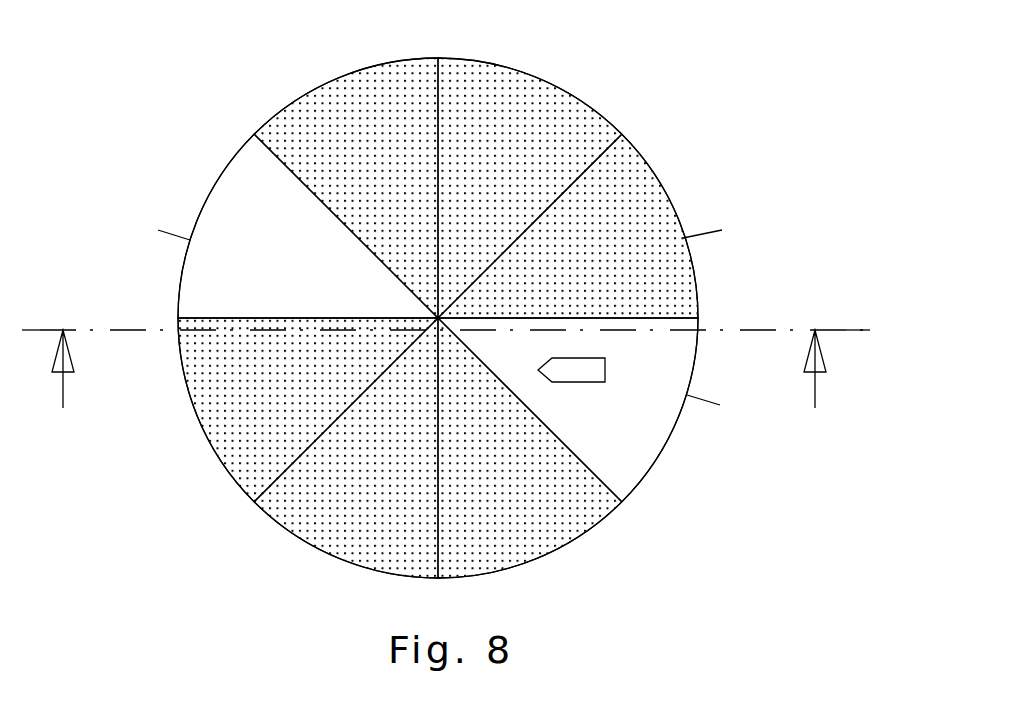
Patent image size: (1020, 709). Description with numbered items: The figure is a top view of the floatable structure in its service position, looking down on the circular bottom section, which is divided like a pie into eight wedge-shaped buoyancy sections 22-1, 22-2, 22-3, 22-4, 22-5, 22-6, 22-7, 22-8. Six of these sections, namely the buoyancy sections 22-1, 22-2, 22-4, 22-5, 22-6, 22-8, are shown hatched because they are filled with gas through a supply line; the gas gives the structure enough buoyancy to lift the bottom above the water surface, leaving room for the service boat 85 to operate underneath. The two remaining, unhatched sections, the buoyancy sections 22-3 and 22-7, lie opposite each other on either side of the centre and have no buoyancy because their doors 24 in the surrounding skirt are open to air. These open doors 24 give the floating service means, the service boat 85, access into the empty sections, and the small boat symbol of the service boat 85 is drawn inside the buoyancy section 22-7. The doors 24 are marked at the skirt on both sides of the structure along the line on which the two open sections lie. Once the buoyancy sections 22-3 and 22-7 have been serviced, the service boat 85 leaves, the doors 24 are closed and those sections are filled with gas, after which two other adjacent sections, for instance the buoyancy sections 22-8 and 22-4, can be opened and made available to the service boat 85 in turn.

The buoyancy section 22-1 is at (343, 530).
The buoyancy section 22-2 is at (230, 400).
The buoyancy section 22-3 is at (262, 198).
The buoyancy section 22-4 is at (376, 115).
The buoyancy section 22-5 is at (538, 120).
The buoyancy section 22-6 is at (665, 258).
The buoyancy section 22-7 is at (620, 453).
The buoyancy section 22-8 is at (528, 515).
The door 24 is at (193, 225).
The service boat 85 is at (605, 382).